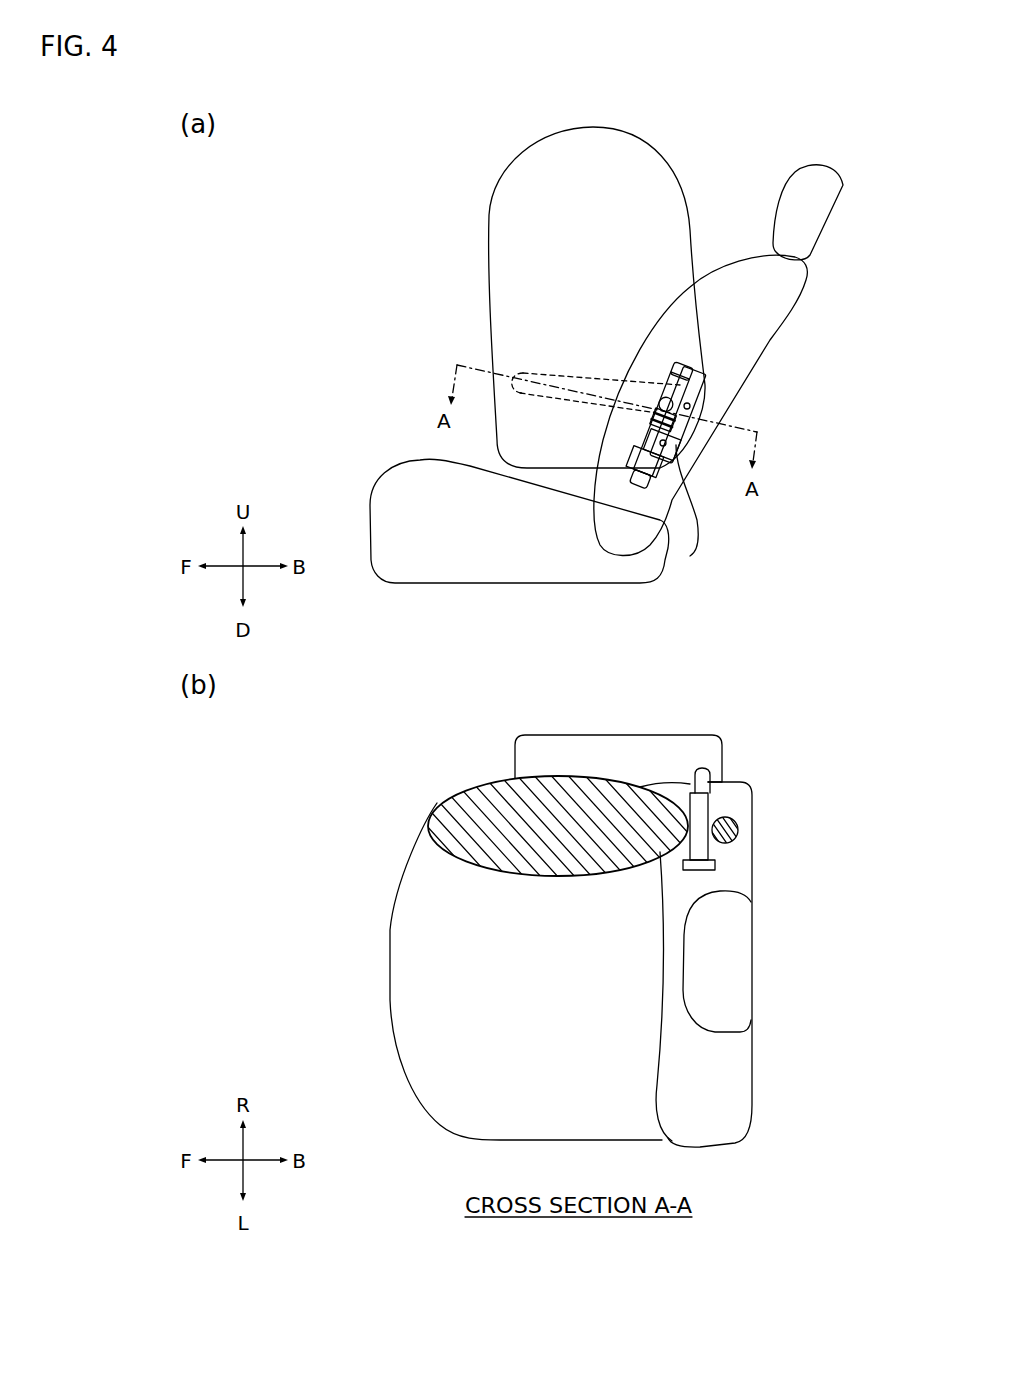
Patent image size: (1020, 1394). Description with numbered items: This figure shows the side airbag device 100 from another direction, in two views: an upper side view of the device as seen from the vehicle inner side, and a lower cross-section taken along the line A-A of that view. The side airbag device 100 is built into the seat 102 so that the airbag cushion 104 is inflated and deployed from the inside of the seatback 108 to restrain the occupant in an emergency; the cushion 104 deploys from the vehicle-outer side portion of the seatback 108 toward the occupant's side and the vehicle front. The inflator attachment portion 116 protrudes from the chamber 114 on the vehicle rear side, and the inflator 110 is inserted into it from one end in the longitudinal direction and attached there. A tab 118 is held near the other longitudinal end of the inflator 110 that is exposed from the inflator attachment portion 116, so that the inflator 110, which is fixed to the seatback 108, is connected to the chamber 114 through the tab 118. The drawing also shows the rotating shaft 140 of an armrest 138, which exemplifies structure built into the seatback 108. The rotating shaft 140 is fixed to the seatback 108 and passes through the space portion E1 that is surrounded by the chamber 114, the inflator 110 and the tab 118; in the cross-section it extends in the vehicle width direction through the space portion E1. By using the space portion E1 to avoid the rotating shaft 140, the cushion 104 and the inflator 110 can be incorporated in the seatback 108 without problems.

The side airbag device 100 is at (373, 176).
The seat 102 is at (837, 175).
The airbag cushion 104 is at (579, 613).
The seatback 108 is at (787, 287).
The inflator 110 is at (675, 454).
The chamber 114 is at (657, 171).
The inflator attachment portion 116 is at (690, 341).
The tab 118 is at (688, 482).
The armrest 138 is at (523, 372).
The rotating shaft 140 is at (740, 601).
The space portion E1 is at (693, 363).